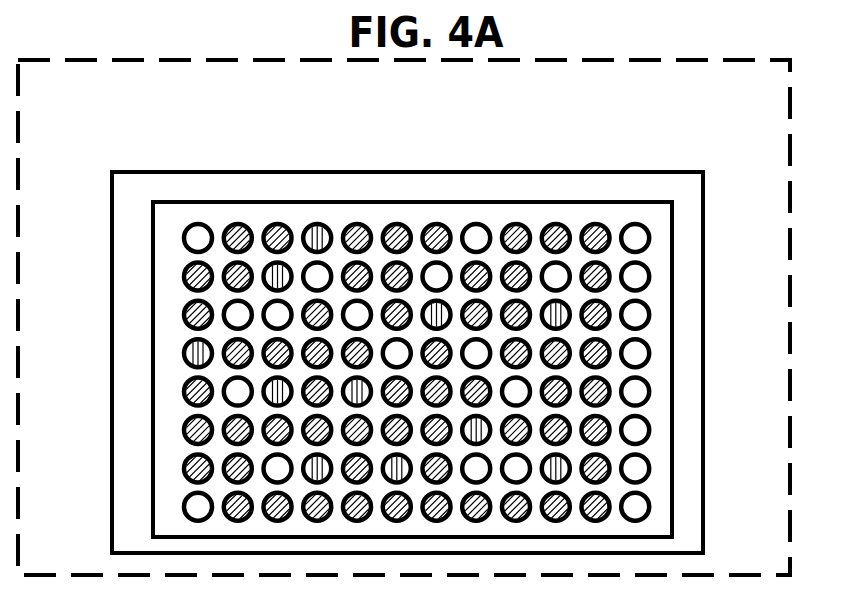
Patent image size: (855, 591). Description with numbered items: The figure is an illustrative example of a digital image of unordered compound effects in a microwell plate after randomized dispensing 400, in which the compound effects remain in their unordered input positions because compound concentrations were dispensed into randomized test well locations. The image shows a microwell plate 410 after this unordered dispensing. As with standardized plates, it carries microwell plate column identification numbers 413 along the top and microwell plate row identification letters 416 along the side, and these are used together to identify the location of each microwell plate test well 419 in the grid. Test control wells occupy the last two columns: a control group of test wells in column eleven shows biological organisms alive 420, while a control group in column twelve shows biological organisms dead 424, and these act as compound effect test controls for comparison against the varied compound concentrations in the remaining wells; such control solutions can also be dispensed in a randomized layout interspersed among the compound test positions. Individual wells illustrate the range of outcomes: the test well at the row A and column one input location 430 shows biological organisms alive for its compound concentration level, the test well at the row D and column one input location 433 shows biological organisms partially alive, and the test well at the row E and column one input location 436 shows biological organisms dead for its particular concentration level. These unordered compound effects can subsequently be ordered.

The digital image of unordered compound effects in a microwell plate after randomize 400 is at (772, 95).
The microwell plate 410 is at (145, 190).
The microwell plate column identification numbers 413 is at (247, 186).
The microwell plate row identification letters 416 is at (122, 470).
The microwell plate test well 419 is at (362, 215).
The biological organisms alive (control group) 420 is at (636, 236).
The biological organisms dead (control group) 424 is at (597, 235).
The row A and column 1 input location 430 is at (195, 240).
The row D and column 1 input location 433 is at (195, 352).
The row E and column 1 input location 436 is at (195, 392).